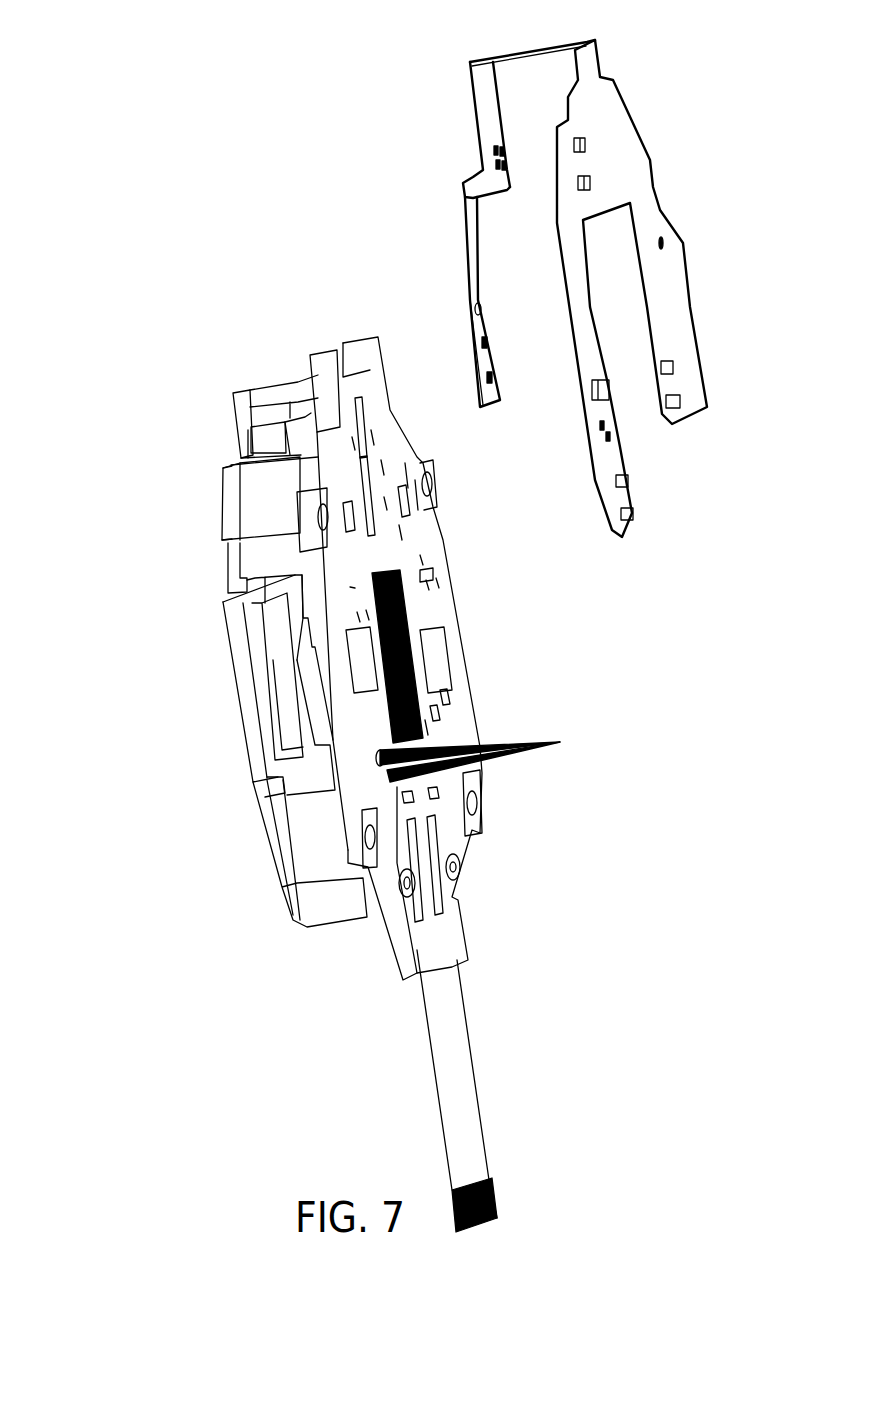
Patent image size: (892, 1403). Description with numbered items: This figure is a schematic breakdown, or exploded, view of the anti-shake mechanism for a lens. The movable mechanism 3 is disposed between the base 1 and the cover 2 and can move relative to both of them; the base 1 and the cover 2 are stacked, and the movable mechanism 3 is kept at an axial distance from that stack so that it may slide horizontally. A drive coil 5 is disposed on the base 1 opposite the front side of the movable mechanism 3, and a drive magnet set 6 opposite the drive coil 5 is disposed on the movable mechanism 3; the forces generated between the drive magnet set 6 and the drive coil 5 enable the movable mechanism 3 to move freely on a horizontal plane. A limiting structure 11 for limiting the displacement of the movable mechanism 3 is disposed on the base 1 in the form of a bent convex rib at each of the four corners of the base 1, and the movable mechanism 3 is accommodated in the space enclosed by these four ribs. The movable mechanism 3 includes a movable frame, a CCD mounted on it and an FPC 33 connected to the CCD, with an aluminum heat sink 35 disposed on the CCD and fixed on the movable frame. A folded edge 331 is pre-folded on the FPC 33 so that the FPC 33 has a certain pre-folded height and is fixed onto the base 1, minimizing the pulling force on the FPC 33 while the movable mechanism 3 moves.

The base 1 is at (423, 545).
The cover 2 is at (230, 500).
The movable mechanism 3 is at (243, 605).
The drive coil 5 is at (315, 757).
The drive magnet set 6 is at (276, 663).
The limiting structure 11 is at (272, 500).
The FPC 33 is at (570, 196).
The heat sink 35 is at (450, 705).
The folded edge 331 is at (522, 757).